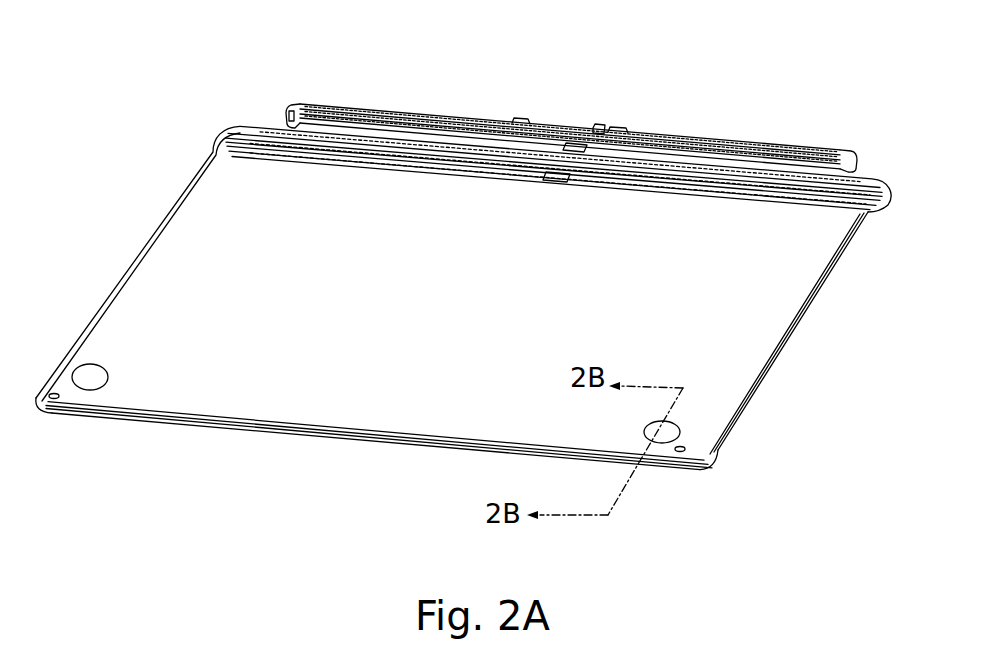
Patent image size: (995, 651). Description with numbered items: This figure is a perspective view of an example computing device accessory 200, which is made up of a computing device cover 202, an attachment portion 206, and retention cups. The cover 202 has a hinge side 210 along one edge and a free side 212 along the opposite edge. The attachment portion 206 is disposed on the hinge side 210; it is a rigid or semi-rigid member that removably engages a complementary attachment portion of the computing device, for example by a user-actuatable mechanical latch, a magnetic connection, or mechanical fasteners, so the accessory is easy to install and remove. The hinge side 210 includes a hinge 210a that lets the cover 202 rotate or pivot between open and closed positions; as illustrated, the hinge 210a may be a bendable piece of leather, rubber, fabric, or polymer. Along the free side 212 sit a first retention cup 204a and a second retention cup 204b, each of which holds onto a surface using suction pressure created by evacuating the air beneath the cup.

The computing device accessory 200 is at (460, 282).
The computing device cover 202 is at (449, 328).
The first retention cup 204a is at (672, 432).
The second retention cup 204b is at (92, 378).
The attachment portion 206 is at (634, 174).
The hinge side 210 is at (558, 129).
The hinge 210a is at (737, 163).
The free side 212 is at (379, 462).